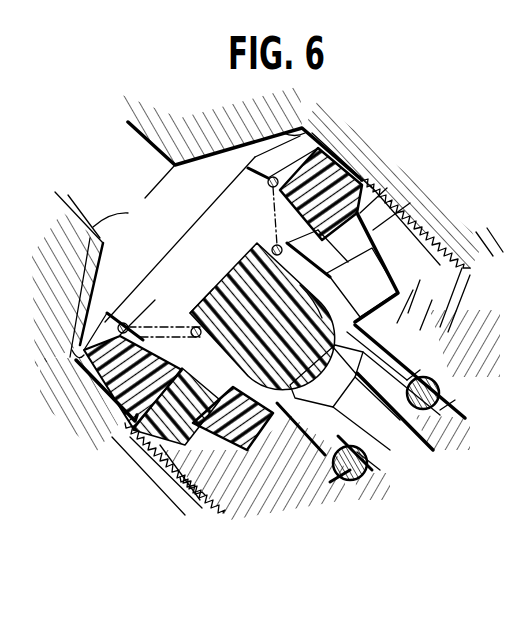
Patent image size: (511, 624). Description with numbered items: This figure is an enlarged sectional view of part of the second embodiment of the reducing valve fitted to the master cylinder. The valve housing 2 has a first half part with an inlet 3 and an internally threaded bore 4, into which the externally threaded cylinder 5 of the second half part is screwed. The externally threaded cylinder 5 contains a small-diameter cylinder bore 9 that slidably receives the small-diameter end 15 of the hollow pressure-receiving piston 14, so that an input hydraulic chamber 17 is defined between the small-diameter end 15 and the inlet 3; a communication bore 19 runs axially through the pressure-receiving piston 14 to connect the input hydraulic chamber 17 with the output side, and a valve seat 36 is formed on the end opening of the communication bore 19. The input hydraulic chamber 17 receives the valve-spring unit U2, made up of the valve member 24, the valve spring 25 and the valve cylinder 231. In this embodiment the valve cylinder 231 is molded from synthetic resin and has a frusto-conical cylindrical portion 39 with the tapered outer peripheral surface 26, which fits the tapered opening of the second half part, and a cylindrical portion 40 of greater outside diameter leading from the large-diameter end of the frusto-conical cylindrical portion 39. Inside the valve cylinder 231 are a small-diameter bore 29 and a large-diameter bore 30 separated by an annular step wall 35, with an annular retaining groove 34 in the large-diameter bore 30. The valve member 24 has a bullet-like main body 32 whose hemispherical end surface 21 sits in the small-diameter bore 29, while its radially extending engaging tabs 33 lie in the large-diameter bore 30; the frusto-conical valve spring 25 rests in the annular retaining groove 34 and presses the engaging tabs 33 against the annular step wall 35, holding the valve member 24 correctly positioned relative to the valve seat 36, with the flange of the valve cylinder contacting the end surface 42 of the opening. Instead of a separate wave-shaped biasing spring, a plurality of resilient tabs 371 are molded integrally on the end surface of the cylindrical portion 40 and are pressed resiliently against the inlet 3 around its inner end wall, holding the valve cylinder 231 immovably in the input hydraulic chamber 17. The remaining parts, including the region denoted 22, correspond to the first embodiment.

The valve housing 2 is at (478, 273).
The inlet 3 is at (80, 280).
The internally threaded bore 4 is at (412, 216).
The externally threaded cylinder 5 is at (443, 247).
The small-diameter cylinder bore 9 is at (382, 341).
The pressure-receiving piston 14 is at (459, 408).
The small-diameter end 15 is at (340, 409).
The input hydraulic chamber 17 is at (176, 236).
The communication bore 19 is at (369, 482).
The hemispherical end surface 21 is at (150, 486).
The bottom wall 22 is at (253, 500).
The valve cylinder 231 is at (380, 257).
The valve member 24 is at (229, 263).
The valve spring 25 is at (283, 157).
The tapered outer peripheral surface 26 is at (393, 280).
The small-diameter bore 29 is at (233, 418).
The large-diameter bore 30 is at (321, 194).
The main body 32 is at (213, 289).
The engaging tabs 33 is at (240, 337).
The annular retaining groove 34 is at (122, 340).
The annular step wall 35 is at (330, 268).
The valve seat 36 is at (325, 305).
The resilient tabs 371 is at (294, 134).
The frusto-conical cylindrical portion 39 is at (247, 440).
The cylindrical portion 40 is at (118, 398).
The end surface 42 is at (400, 225).
The valve-spring unit U2 is at (132, 428).